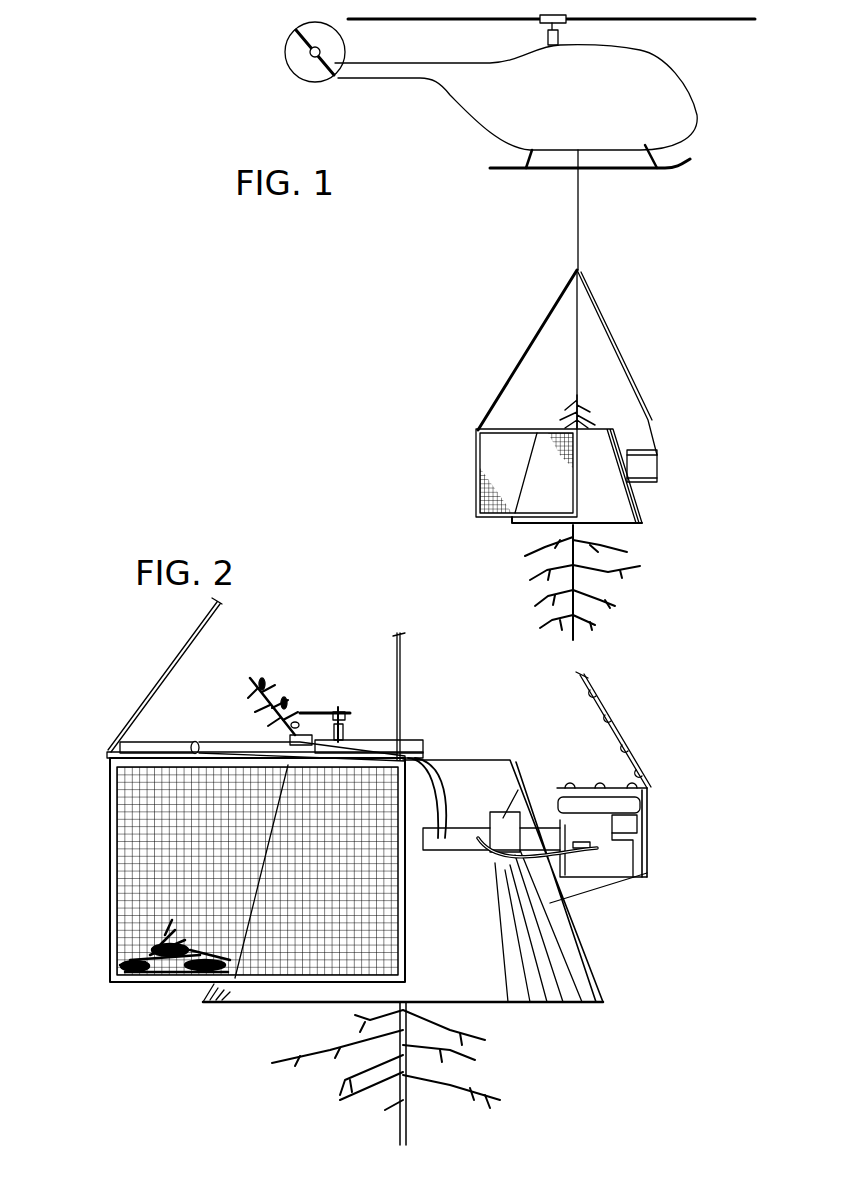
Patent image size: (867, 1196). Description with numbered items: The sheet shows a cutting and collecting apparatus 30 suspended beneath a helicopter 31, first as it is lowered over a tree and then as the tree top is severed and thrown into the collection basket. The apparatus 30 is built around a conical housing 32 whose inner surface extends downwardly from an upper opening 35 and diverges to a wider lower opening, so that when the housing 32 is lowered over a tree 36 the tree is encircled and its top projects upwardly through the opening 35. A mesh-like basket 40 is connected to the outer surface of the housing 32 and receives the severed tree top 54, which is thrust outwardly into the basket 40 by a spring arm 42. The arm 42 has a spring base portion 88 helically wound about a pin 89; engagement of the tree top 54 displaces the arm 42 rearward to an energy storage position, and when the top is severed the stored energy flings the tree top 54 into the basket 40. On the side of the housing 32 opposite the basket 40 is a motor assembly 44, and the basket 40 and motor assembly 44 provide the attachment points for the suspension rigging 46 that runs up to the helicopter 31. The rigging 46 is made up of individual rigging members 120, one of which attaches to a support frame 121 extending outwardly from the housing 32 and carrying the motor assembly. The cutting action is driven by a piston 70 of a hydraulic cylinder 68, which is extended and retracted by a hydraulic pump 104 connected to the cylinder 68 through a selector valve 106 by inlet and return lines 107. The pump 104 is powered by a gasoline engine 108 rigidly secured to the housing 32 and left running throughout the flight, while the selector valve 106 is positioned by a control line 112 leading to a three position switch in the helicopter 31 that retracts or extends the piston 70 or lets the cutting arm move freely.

In FIG. 1, the cutting and collecting apparatus 30 is at (672, 462).
In FIG. 1, the helicopter 31 is at (688, 103).
In FIG. 1, the conical housing 32 is at (640, 508).
In FIG. 1, the upper opening 35 is at (607, 420).
In FIG. 1, the tree 36 is at (605, 593).
In FIG. 1, the mesh-like basket 40 is at (476, 478).
In FIG. 2, the mesh-like basket 40 is at (108, 805).
In FIG. 2, the spring arm 42 is at (307, 713).
In FIG. 2, the motor assembly 44 is at (652, 848).
In FIG. 1, the suspension rigging 46 is at (632, 375).
In FIG. 1, the tree top 54 is at (560, 410).
In FIG. 2, the hydraulic cylinder 68 is at (218, 740).
In FIG. 2, the piston 70 is at (315, 738).
In FIG. 2, the spring base portion 88 is at (352, 715).
In FIG. 2, the pin 89 is at (350, 733).
In FIG. 2, the hydraulic pump 104 is at (590, 858).
In FIG. 2, the selector valve 106 is at (455, 850).
In FIG. 2, the inlet and return lines 107 is at (432, 800).
In FIG. 2, the gasoline engine 108 is at (612, 825).
In FIG. 2, the control line 112 is at (625, 747).
In FIG. 2, the rigging members 120 is at (165, 668).
In FIG. 2, the support frame 121 is at (647, 868).